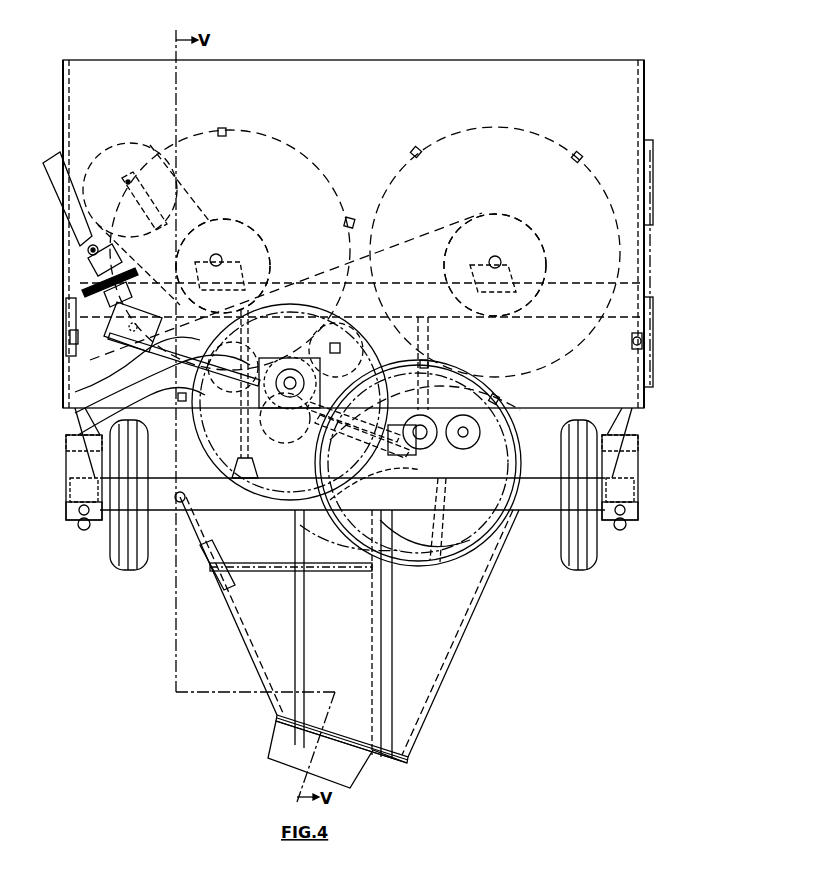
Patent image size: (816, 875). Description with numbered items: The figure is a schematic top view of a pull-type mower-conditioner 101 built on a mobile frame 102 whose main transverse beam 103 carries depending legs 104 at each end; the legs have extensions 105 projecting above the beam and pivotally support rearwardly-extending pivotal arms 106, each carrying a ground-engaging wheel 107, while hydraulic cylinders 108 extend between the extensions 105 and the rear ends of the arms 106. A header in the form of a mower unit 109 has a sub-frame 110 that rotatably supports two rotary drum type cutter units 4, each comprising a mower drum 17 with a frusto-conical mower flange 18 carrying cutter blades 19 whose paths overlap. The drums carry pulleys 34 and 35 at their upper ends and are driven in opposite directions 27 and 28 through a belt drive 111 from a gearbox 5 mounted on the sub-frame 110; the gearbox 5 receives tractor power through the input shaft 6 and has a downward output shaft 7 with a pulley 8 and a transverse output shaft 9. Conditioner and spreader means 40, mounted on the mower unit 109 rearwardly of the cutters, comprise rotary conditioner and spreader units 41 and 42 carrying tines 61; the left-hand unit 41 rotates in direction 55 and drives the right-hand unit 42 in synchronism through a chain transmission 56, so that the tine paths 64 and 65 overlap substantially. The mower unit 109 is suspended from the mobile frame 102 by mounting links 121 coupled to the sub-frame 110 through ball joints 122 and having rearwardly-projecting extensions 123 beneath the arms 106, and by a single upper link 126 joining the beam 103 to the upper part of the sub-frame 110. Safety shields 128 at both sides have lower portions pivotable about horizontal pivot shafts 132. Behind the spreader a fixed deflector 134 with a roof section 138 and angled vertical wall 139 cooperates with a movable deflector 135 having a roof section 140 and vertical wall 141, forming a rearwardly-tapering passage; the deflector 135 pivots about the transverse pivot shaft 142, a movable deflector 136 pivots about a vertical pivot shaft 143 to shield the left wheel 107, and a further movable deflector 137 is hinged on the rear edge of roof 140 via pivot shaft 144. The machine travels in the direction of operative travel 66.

The rotary drum type cutter unit 4 is at (382, 187).
The gearbox 5 is at (145, 310).
The input shaft 6 is at (62, 205).
The output shaft 7 is at (75, 392).
The pulley 8 is at (75, 413).
The transverse output shaft 9 is at (78, 435).
The mower drum 17 is at (270, 262).
The frusto-conical mower flange 18 is at (286, 152).
The cutter blade 19 is at (226, 130).
The direction of rotation of cutter unit 27 is at (260, 200).
The direction of rotation of cutter unit 28 is at (458, 185).
The pulley 34 is at (228, 219).
The pulley 35 is at (538, 238).
The conditioner and spreader means 40 is at (469, 555).
The rotary conditioner and spreader unit 41 is at (310, 522).
The rotary conditioner and spreader unit 42 is at (418, 564).
The direction of rotation of left-hand rotary unit 55 is at (404, 380).
The chain transmission 56 is at (472, 378).
The conditioner and spreader tine 61 is at (228, 470).
The tine path 64 is at (248, 495).
The tine path 65 is at (450, 560).
The direction of operative travel 66 is at (363, 22).
The mower-conditioner 101 is at (98, 600).
The mobile frame 102 is at (541, 512).
The main transverse beam 103 is at (165, 510).
The depending leg 104 is at (66, 472).
The leg extension 105 is at (66, 515).
The pivotal arm 106 is at (68, 495).
The ground-engaging wheel 107 is at (128, 570).
The hydraulic cylinder 108 is at (84, 530).
The mower unit 109 is at (602, 55).
The sub-frame 110 is at (612, 283).
The belt drive 111 is at (402, 236).
The mounting link 121 is at (66, 450).
The ball joint 122 is at (640, 333).
The rearwardly-projecting extension 123 is at (72, 522).
The upper link 126 is at (262, 406).
The safety shield 128 is at (63, 108).
The horizontal pivot shaft 132 is at (650, 228).
The fixed deflector 134 is at (428, 718).
The movable deflector 135 is at (245, 648).
The movable deflector 136 is at (220, 565).
The movable deflector 137 is at (365, 770).
The roof section 138 is at (410, 633).
The vertical wall 139 is at (418, 740).
The roof section 140 is at (346, 632).
The vertical wall 141 is at (232, 618).
The pivot shaft 142 is at (262, 563).
The vertical pivot shaft 143 is at (186, 498).
The pivot shaft 144 is at (272, 718).